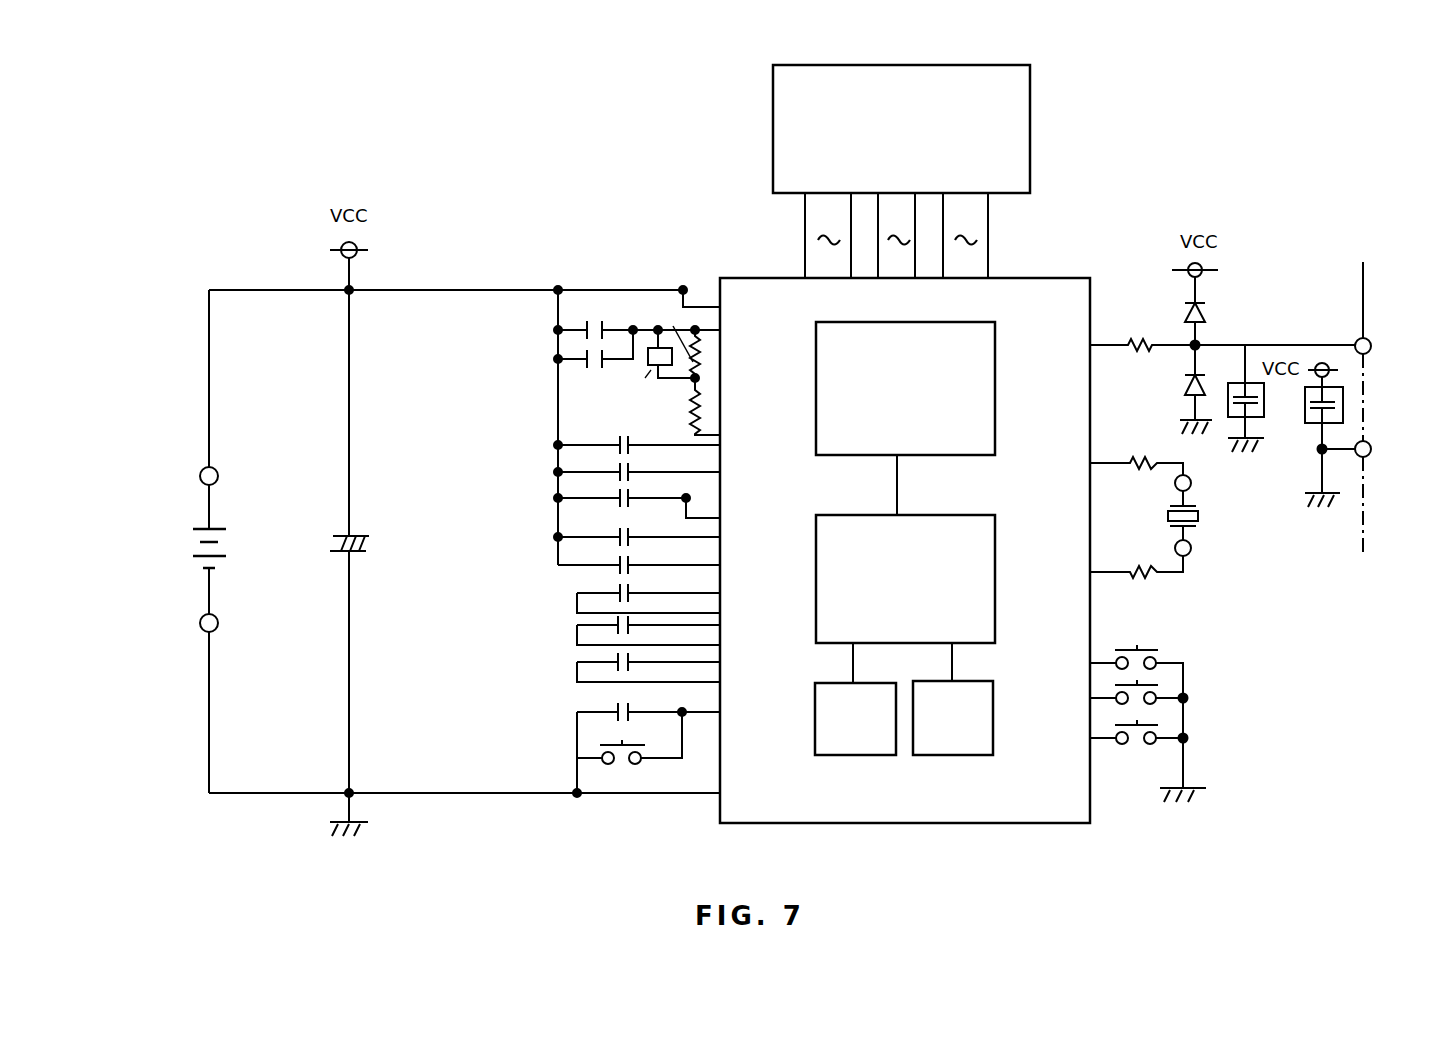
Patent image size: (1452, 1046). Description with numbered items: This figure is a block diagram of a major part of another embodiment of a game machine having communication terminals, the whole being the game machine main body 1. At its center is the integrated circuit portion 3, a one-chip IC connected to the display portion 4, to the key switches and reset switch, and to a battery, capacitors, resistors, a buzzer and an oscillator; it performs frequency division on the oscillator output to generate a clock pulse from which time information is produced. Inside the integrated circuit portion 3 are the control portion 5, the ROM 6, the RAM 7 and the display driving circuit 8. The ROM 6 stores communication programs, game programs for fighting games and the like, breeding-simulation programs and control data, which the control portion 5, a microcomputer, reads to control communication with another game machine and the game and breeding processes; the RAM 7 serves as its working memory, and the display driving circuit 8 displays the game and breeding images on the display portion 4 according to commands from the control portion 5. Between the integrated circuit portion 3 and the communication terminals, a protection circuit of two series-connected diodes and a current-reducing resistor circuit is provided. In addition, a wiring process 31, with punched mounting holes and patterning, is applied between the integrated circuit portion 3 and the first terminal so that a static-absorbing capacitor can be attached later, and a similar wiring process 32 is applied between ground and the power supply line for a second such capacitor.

The game machine main body 1 is at (1180, 163).
The integrated circuit portion 3 is at (1052, 278).
The display portion 4 is at (1030, 103).
The control portion 5 is at (995, 605).
The ROM 6 is at (815, 729).
The RAM 7 is at (993, 728).
The display driving circuit 8 is at (995, 425).
The wiring process 31 is at (1245, 394).
The wiring process 32 is at (1360, 453).